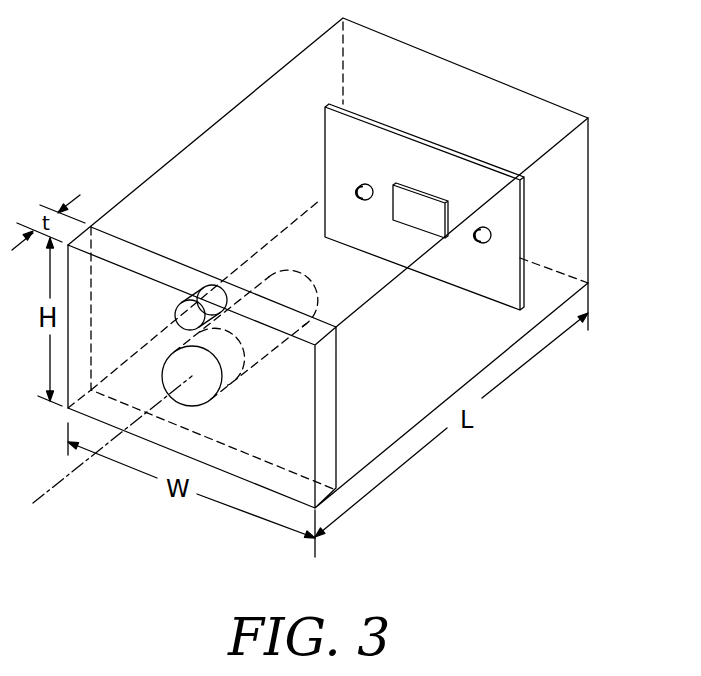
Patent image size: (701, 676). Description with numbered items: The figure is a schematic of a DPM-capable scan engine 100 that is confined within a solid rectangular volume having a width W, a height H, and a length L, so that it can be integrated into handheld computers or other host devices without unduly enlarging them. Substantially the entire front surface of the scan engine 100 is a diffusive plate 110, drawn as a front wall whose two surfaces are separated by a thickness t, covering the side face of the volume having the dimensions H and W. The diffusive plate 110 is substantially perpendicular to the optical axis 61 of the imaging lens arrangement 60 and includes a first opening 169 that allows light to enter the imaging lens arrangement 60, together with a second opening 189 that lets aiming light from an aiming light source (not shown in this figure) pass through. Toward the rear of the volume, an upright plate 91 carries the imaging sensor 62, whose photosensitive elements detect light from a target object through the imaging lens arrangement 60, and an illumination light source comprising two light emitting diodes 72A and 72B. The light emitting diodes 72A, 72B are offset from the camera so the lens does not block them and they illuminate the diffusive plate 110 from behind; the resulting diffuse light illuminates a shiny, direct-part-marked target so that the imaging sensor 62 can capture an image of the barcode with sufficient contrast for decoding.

The scan engine 100 is at (91, 33).
The diffusive plate 110 is at (328, 440).
The mounting plate 91 is at (492, 167).
The light emitting diode 72A is at (361, 182).
The light emitting diode 72B is at (491, 231).
The imaging sensor 62 is at (418, 192).
The first opening 169 is at (178, 370).
The imaging lens arrangement 60 is at (275, 285).
The second opening 189 is at (192, 315).
The optical axis 61 is at (56, 486).